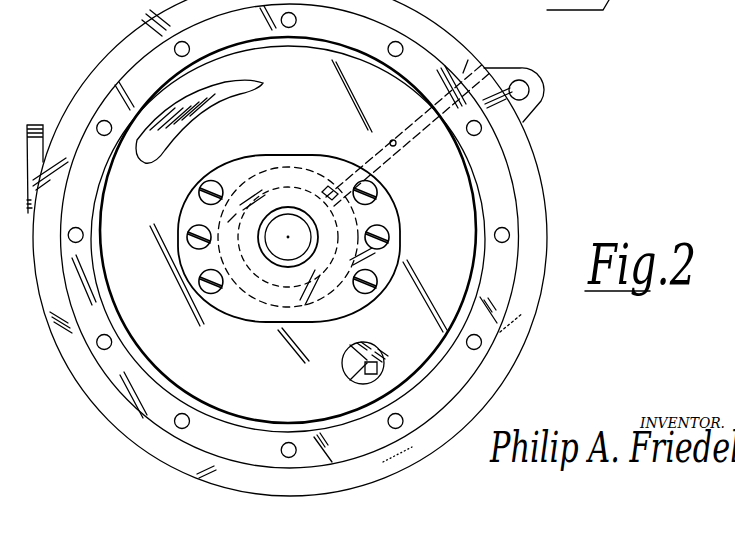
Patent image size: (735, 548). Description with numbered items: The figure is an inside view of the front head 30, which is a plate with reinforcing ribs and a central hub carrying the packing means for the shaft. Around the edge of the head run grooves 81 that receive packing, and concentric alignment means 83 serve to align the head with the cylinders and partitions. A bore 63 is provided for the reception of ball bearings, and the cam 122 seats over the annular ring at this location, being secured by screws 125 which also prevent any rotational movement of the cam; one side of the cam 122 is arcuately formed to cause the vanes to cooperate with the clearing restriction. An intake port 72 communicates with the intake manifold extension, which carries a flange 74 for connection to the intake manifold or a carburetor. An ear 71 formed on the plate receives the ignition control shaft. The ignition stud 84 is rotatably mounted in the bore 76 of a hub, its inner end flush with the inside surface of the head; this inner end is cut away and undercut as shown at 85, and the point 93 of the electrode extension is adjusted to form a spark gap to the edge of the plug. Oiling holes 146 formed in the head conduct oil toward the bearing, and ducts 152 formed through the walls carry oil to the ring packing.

The front head 30 is at (525, 170).
The concentric alignment means 83 is at (143, 55).
The flange 74 is at (37, 124).
The grooves 81 is at (480, 206).
The intake port 72 is at (197, 110).
The cams 122 is at (313, 163).
The bore 63 is at (260, 173).
The ducts 152 is at (392, 140).
The screws 125 is at (406, 134).
The holes 146 is at (463, 73).
The ear 71 is at (505, 64).
The bore 76 is at (381, 346).
The point 93 is at (387, 360).
The ignition stud 84 is at (347, 355).
The undercut 85 is at (350, 380).